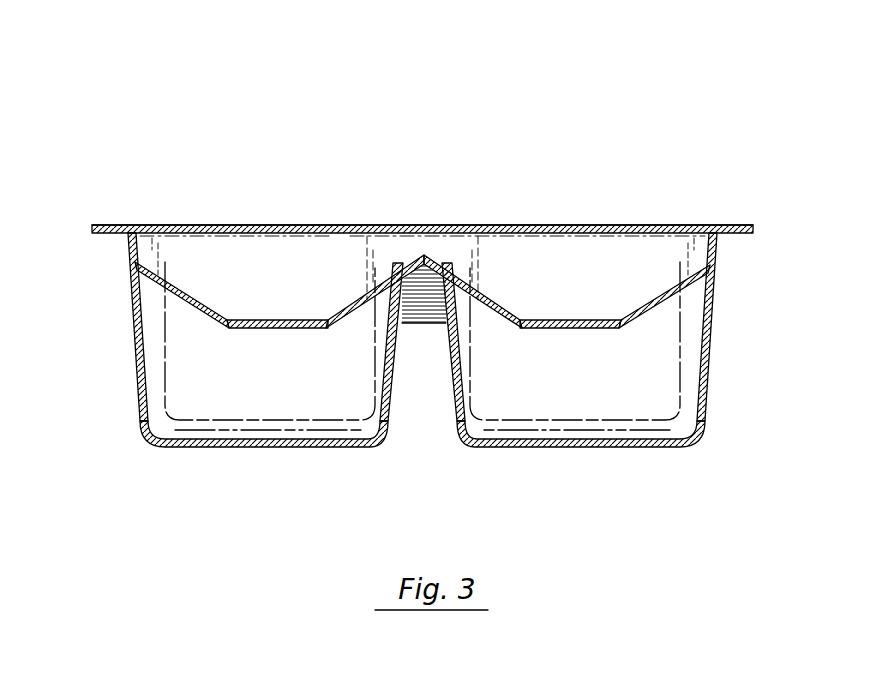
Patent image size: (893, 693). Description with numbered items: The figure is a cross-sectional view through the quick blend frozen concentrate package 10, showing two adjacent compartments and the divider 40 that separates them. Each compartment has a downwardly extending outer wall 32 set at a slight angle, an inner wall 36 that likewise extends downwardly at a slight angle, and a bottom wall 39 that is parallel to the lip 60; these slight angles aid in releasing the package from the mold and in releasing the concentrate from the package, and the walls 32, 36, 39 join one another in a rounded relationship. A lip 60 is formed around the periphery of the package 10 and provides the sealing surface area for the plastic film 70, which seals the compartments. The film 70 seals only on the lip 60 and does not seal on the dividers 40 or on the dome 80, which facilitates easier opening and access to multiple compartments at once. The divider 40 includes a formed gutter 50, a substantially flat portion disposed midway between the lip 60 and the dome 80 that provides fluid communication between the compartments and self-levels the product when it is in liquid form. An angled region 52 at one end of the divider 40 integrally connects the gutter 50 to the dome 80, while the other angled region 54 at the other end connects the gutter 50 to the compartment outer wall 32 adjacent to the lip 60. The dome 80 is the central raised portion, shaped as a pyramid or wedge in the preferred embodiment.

The quick blend frozen concentrate package 10 is at (421, 268).
The outer wall 32 is at (142, 367).
The inner wall 36 is at (229, 378).
The bottom wall 39 is at (273, 447).
The divider 40 is at (347, 284).
The gutter 50 is at (268, 318).
The angled region 52 is at (437, 261).
The angled region 54 is at (188, 292).
The lip 60 is at (120, 214).
The plastic film 70 is at (208, 228).
The dome 80 is at (423, 238).